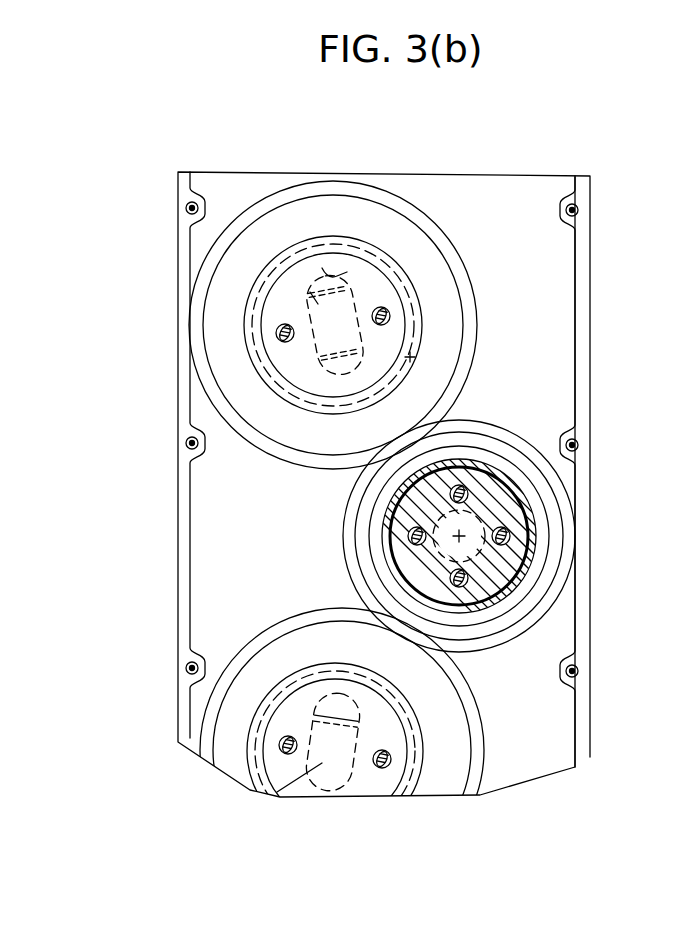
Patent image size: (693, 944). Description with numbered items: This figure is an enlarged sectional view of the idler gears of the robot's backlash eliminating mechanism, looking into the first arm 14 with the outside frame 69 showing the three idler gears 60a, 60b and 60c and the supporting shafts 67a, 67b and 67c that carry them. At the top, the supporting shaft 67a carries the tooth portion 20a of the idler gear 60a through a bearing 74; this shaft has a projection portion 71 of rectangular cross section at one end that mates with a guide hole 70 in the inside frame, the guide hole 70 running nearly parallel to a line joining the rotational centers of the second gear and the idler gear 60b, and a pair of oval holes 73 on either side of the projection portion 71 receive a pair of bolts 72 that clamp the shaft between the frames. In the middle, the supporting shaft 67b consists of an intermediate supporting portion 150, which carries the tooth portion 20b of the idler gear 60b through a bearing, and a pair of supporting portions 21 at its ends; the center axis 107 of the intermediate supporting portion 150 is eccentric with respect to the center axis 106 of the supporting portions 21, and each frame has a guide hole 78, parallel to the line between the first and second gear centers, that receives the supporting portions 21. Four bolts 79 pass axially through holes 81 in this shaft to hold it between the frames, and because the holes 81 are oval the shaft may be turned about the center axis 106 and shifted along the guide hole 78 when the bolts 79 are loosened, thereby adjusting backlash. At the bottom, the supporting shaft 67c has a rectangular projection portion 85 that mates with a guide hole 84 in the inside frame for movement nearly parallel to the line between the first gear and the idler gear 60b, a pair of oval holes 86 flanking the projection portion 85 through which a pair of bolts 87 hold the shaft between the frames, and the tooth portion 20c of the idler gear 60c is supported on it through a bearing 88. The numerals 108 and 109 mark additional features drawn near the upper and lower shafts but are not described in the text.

The first arm 14 is at (562, 287).
The idler gear 60a is at (235, 267).
The idler gear 60b is at (310, 519).
The idler gear 60c is at (247, 660).
The tooth portion 20a is at (245, 393).
The tooth portion 20b is at (370, 537).
The tooth portion 20c is at (425, 750).
The supporting shaft 67a is at (378, 275).
The supporting shaft 67b is at (477, 517).
The supporting shaft 67c is at (360, 707).
The guide hole 70 is at (340, 273).
The projection portion 71 is at (313, 297).
The bolts 72 is at (280, 337).
The oval holes 73 is at (280, 333).
The bearing 74 is at (416, 357).
The valve slot 108 is at (335, 325).
The outside frame 69 is at (525, 520).
The guide hole 78 is at (520, 578).
The bolts 79 is at (490, 487).
The holes 81 is at (455, 490).
The center axis 106 is at (500, 578).
The center axis 107 is at (560, 478).
The intermediate supporting portion 150 is at (395, 570).
The supporting portions 21 is at (495, 615).
The guide hole 84 is at (445, 795).
The projection portion 85 is at (277, 792).
The oval holes 86 is at (283, 744).
The bolts 87 is at (283, 750).
The bearing 88 is at (422, 727).
The valve slot 109 is at (337, 752).